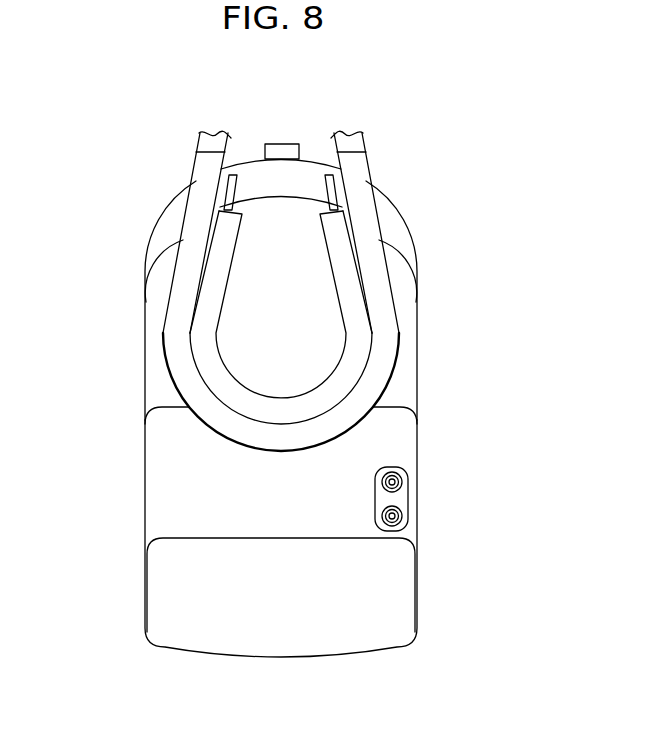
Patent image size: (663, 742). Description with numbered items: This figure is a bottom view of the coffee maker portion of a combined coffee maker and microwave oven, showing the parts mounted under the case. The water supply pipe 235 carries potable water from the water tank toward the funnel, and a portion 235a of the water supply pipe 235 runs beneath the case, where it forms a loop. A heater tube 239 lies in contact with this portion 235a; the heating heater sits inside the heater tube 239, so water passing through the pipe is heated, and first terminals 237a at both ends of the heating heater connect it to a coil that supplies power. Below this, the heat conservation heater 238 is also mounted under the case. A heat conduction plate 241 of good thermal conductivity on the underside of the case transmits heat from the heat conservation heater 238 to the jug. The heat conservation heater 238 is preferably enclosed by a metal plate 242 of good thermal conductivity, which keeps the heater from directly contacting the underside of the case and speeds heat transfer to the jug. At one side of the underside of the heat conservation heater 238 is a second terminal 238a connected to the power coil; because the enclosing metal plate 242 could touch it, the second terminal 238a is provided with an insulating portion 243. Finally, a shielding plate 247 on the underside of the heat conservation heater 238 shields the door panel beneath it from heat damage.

The water supply pipe 235 is at (199, 136).
The portion of the water supply pipe 235a is at (392, 344).
The first terminals 237a is at (335, 182).
The heater tube 239 is at (356, 286).
The heat conduction plate 241 is at (145, 378).
The metal plate 242 is at (167, 491).
The heat conservation heater 238 is at (402, 498).
The second terminal 238a is at (399, 478).
The insulating portion 243 is at (403, 520).
The shielding plate 247 is at (403, 604).